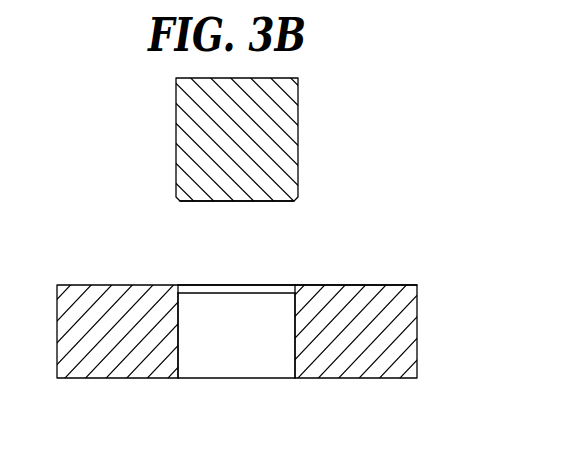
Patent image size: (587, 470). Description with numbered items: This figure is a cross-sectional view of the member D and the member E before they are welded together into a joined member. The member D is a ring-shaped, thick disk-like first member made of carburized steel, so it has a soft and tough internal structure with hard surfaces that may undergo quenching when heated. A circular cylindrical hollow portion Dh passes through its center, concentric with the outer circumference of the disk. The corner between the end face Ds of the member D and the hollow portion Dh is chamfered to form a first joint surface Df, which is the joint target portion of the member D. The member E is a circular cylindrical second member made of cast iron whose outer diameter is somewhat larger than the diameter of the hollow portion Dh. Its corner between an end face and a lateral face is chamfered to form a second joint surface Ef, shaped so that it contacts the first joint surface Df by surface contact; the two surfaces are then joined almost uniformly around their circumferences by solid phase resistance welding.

The member E is at (298, 137).
The second joint surface Ef is at (296, 193).
The member D is at (417, 342).
The first joint surface Df is at (294, 286).
The end face Ds is at (368, 284).
The hollow portion Dh is at (247, 360).